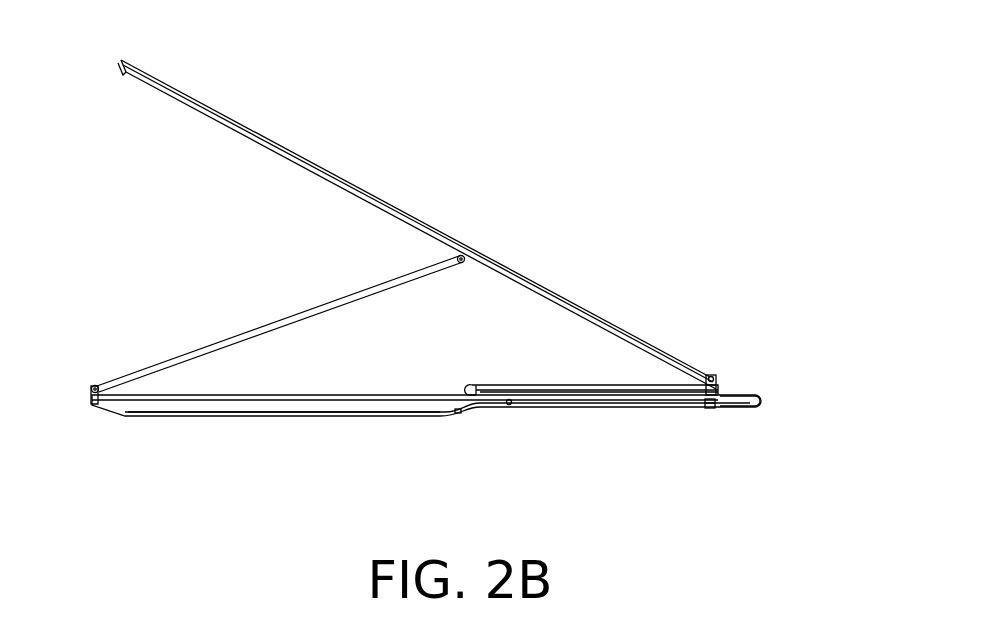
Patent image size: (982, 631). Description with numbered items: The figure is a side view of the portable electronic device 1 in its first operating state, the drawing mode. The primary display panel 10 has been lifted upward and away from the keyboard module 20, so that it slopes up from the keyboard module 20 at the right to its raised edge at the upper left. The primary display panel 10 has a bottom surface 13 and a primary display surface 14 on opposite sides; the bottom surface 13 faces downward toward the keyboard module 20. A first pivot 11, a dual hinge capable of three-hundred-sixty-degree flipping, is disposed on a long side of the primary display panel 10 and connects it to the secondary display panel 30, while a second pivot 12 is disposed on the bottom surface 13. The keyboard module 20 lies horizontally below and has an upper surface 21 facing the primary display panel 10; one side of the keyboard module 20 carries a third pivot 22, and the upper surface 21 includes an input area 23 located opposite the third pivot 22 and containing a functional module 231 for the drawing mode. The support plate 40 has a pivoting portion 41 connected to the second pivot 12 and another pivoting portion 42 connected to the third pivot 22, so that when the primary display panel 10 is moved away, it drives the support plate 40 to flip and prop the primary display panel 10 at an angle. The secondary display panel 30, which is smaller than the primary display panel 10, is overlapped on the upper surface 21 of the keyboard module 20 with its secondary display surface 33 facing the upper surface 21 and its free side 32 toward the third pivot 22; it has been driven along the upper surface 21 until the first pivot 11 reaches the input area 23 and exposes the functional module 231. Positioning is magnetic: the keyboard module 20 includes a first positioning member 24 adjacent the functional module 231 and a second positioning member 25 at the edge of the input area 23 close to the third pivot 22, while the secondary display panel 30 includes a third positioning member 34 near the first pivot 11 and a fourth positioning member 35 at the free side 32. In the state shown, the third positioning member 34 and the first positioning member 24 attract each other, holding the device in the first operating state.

The portable electronic device 1 is at (96, 28).
The primary display panel 10 is at (374, 194).
The first pivot 11 is at (711, 375).
The second pivot 12 is at (452, 253).
The bottom surface 13 is at (282, 157).
The primary display surface 14 is at (543, 284).
The keyboard module 20 is at (260, 414).
The upper surface 21 is at (356, 404).
The third pivot 22 is at (88, 396).
The input area 23 is at (766, 400).
The functional module 231 is at (740, 401).
The first positioning member 24 is at (708, 409).
The second positioning member 25 is at (510, 405).
The secondary display panel 30 is at (567, 386).
The free side 32 is at (470, 396).
The secondary display surface 33 is at (565, 403).
The third positioning member 34 is at (718, 388).
The fourth positioning member 35 is at (470, 386).
The support plate 40 is at (215, 343).
The pivoting portion 41 is at (462, 266).
The pivoting portion 42 is at (93, 384).